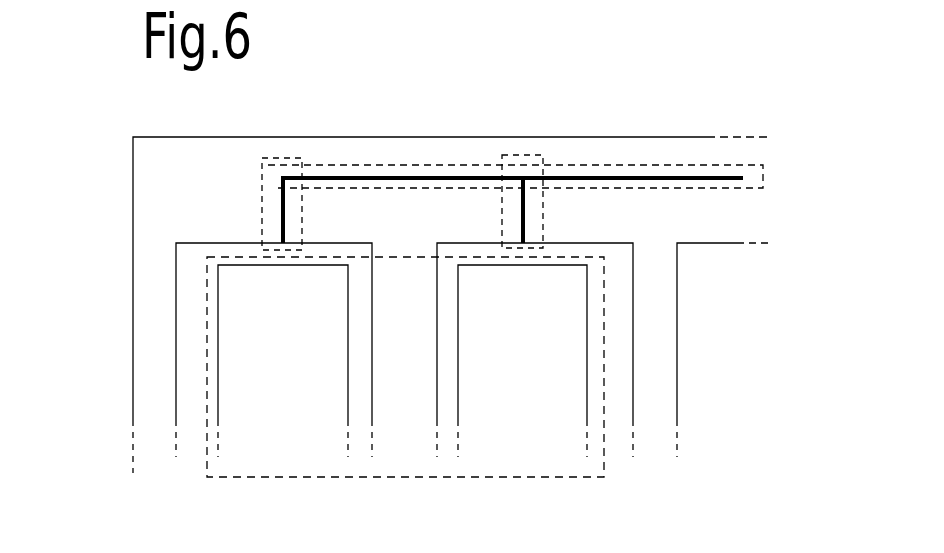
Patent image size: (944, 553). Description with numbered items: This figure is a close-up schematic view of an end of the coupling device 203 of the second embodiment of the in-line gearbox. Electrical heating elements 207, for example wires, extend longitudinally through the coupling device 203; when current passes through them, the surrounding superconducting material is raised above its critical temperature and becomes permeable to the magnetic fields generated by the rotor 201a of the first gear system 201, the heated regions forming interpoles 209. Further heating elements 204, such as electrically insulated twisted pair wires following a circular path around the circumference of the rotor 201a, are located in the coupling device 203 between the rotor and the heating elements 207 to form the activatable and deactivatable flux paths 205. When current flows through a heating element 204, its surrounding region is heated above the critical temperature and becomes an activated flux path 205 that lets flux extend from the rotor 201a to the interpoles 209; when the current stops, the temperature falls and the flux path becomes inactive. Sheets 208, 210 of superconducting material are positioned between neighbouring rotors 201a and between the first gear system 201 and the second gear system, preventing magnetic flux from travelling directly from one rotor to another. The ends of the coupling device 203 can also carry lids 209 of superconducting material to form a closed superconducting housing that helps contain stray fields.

The first gear system 201 is at (607, 320).
The first rotor 201a is at (233, 378).
The coupling device 203 is at (567, 139).
The further heating element 204 is at (282, 212).
The activatable and deactivatable flux path 205 is at (538, 212).
The electrical heating element 207 is at (377, 176).
The sheet of superconducting material 208 is at (382, 345).
The interpole 209 is at (708, 190).
The sheet of superconducting material 210 is at (668, 305).